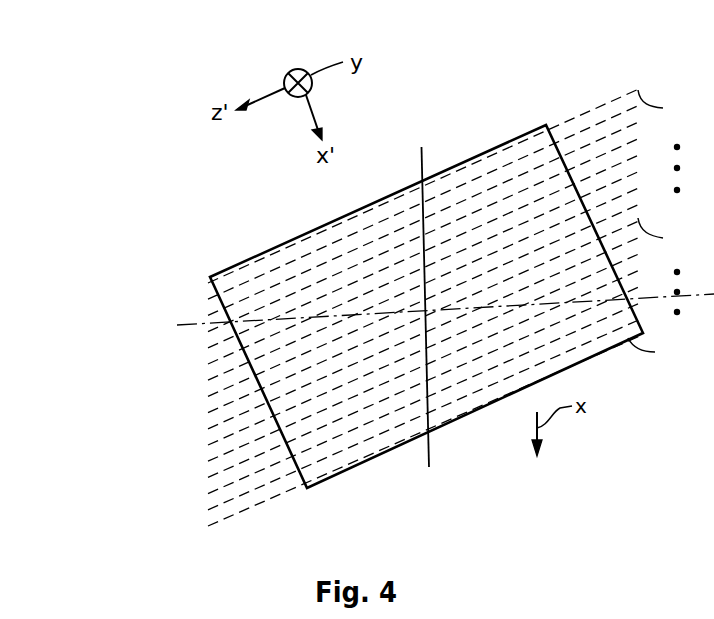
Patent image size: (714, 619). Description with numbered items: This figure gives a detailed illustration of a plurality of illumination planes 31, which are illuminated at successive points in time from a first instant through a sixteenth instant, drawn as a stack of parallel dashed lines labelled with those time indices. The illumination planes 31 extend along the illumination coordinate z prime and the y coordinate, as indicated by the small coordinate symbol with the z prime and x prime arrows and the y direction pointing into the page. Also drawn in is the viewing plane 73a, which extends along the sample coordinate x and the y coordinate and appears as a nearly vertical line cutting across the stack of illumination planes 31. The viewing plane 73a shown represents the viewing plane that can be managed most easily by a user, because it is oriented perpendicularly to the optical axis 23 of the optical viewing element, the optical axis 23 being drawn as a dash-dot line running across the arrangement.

The optical axis 23 is at (187, 323).
The illumination planes 31 is at (167, 424).
The viewing plane 73a is at (429, 452).